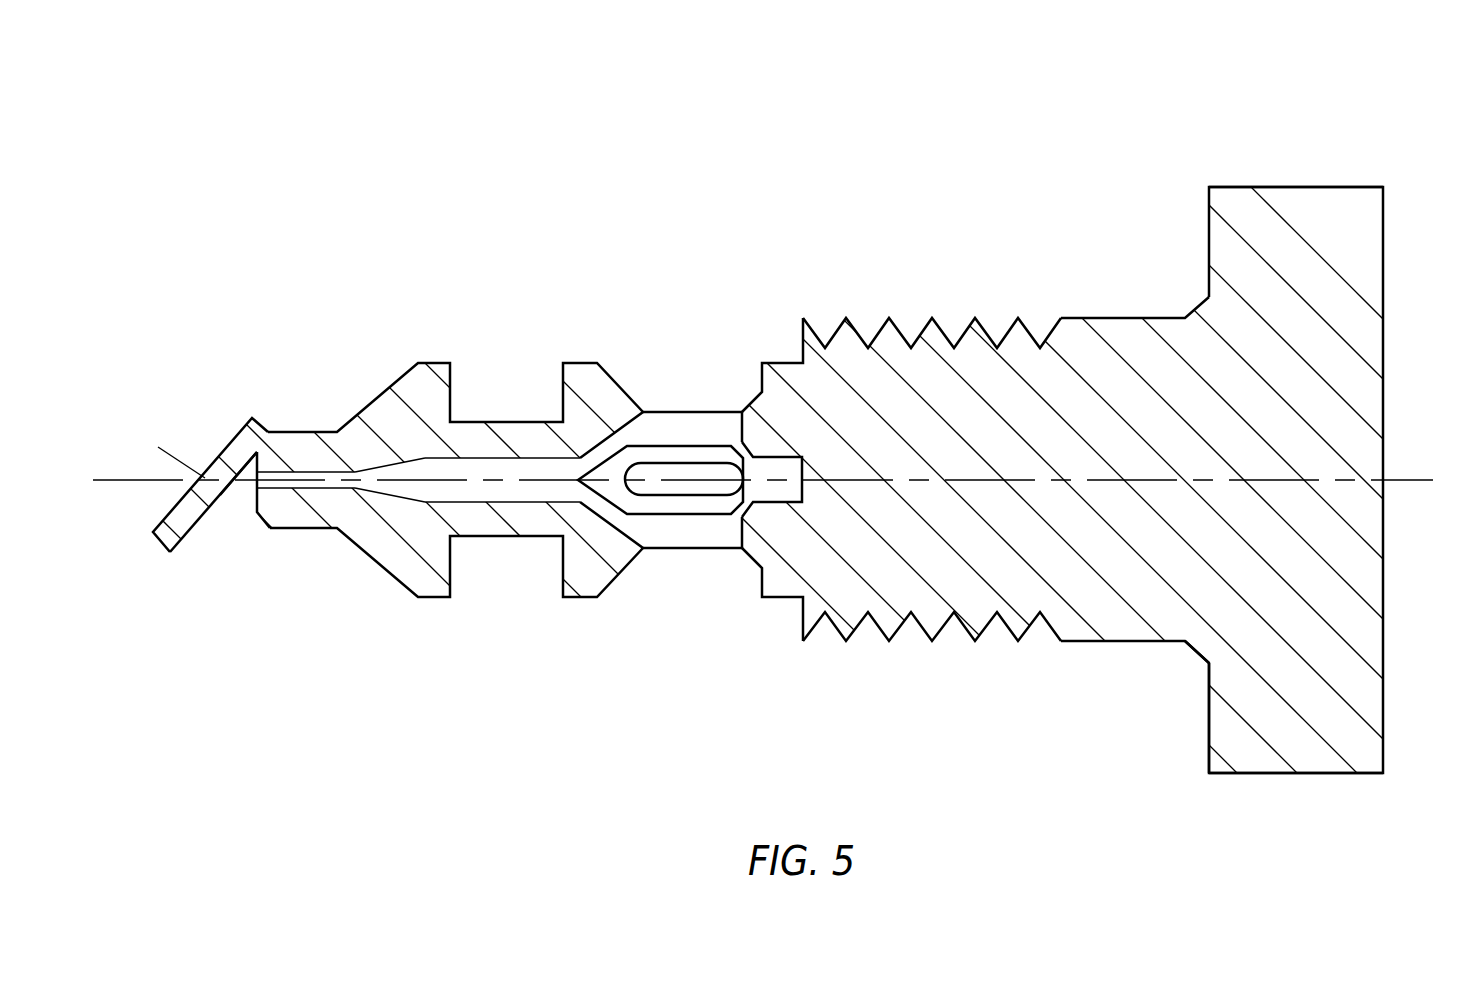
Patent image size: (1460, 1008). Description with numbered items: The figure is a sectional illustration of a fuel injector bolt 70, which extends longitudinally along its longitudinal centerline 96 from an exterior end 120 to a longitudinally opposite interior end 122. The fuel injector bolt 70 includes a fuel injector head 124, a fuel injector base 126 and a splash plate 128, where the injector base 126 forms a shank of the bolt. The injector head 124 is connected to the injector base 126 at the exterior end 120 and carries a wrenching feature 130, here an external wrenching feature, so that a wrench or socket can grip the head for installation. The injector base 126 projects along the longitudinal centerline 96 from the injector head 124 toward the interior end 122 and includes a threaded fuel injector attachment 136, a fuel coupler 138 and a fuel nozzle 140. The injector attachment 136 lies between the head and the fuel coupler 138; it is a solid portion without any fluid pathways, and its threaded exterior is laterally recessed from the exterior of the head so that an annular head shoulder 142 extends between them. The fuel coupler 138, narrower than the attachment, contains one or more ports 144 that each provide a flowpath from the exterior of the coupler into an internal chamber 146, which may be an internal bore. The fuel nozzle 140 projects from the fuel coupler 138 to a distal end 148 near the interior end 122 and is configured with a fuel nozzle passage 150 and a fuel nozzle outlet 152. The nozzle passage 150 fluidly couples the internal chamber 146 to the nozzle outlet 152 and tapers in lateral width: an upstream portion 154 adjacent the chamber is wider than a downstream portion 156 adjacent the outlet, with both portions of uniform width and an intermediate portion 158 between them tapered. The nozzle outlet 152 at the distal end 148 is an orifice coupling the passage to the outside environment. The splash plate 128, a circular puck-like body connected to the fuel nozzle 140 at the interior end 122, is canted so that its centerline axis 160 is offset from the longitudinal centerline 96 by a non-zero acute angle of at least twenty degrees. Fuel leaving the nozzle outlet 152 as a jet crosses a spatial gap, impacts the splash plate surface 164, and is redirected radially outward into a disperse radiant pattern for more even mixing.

The fuel injector bolt 70 is at (730, 455).
The longitudinal centerline 96 is at (1408, 484).
The exterior end 120 is at (1285, 479).
The interior end 122 is at (175, 502).
The fuel injector head 124 is at (1238, 170).
The fuel injector base 126 is at (951, 245).
The splash plate 128 is at (175, 504).
The wrenching feature 130 is at (1298, 788).
The fuel injector attachment 136 is at (944, 660).
The fuel coupler 138 is at (623, 525).
The fuel nozzle 140 is at (730, 475).
The head shoulder 142 is at (1208, 718).
The port 144 is at (682, 418).
The internal chamber 146 is at (600, 511).
The distal end 148 is at (251, 516).
The fuel nozzle passage 150 is at (473, 455).
The fuel nozzle outlet 152 is at (232, 500).
The upstream portion 154 is at (500, 502).
The downstream portion 156 is at (300, 476).
The intermediate portion 158 is at (387, 468).
The centerline axis 160 is at (149, 462).
The splash plate surface 164 is at (188, 540).